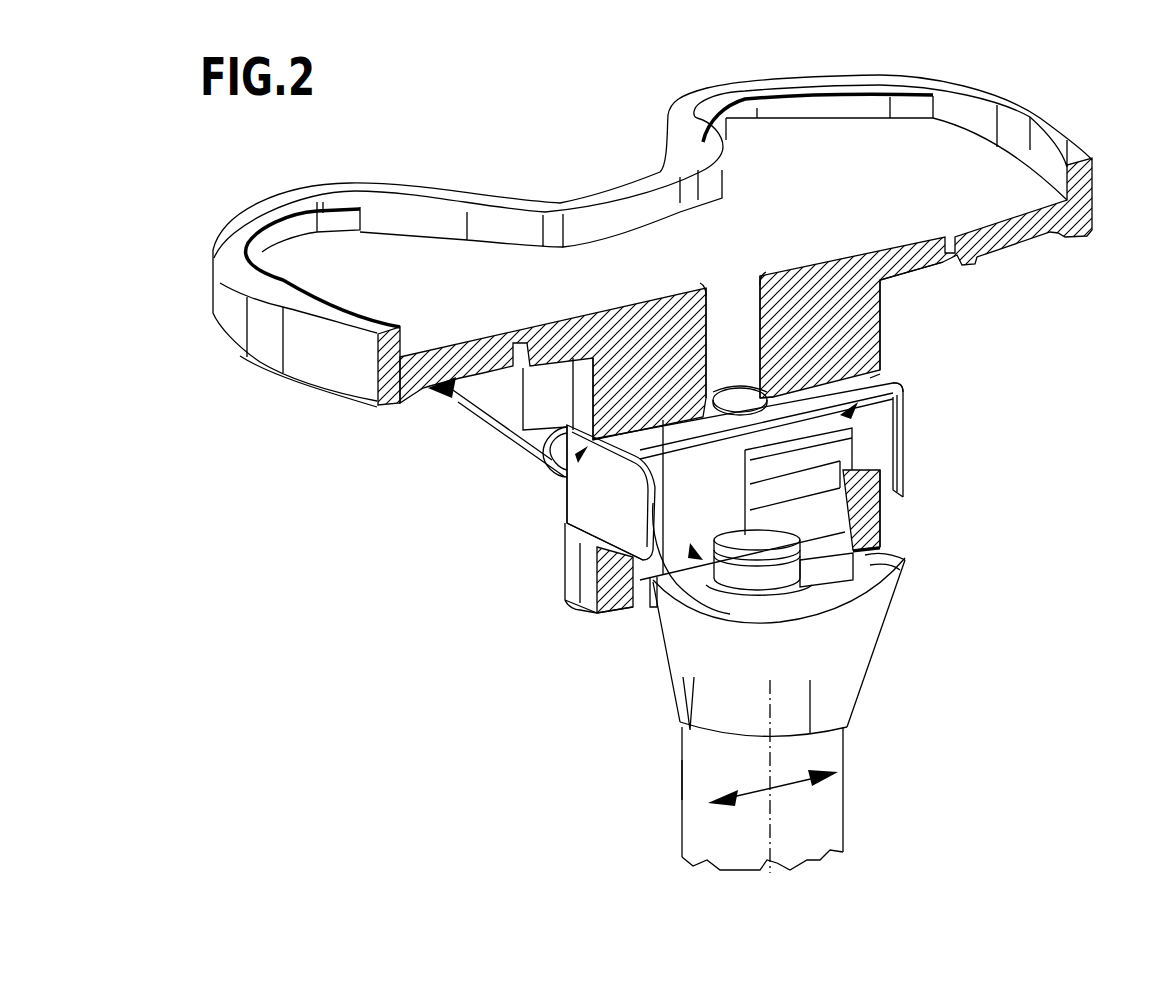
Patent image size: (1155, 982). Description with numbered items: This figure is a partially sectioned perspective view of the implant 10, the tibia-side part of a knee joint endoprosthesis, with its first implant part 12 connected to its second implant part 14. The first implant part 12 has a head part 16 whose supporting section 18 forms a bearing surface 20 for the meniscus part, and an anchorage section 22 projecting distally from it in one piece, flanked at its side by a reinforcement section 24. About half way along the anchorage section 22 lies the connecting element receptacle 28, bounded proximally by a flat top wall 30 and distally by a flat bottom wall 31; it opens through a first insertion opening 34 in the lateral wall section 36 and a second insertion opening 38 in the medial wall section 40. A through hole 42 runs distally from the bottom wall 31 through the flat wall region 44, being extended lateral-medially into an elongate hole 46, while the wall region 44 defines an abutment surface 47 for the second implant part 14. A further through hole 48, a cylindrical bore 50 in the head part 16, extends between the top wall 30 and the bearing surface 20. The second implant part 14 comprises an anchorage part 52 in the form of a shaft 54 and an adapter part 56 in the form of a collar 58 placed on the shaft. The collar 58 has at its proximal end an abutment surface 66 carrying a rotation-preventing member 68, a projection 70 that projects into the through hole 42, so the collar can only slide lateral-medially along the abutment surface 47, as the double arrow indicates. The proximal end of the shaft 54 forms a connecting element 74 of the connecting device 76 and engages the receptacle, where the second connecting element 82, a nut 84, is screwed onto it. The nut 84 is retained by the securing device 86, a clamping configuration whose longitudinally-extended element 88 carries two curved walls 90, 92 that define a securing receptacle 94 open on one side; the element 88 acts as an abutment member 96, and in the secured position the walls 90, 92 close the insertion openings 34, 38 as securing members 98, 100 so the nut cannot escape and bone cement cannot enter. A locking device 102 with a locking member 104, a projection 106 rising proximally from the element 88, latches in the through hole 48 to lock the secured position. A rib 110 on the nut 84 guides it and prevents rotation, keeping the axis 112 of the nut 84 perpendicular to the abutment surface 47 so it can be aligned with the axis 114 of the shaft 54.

The implant 10 is at (520, 118).
The first implant part 12 is at (1068, 90).
The second implant part 14 is at (668, 818).
The head part 16 is at (970, 92).
The supporting section 18 is at (787, 150).
The bearing surface 20 is at (408, 255).
The anchorage section 22 is at (870, 338).
The reinforcement section 24 is at (477, 402).
The connecting element receptacle 28 is at (670, 530).
The top wall 30 is at (907, 383).
The bottom wall 31 is at (877, 488).
The first insertion opening 34 is at (548, 470).
The lateral wall section 36 is at (573, 563).
The second insertion opening 38 is at (884, 373).
The medial wall section 40 is at (890, 307).
The through hole 42 is at (580, 590).
The wall region 44 is at (597, 613).
The elongate hole 46 is at (648, 608).
The abutment surface 47 is at (617, 612).
The through hole 48 is at (748, 292).
The cylindrical bore 50 is at (718, 283).
The anchorage part 52 is at (830, 830).
The shaft 54 is at (830, 787).
The adapter part 56 is at (848, 695).
The collar 58 is at (858, 672).
The abutment surface 66 is at (883, 567).
The rotation-preventing member 68 is at (880, 592).
The projection 70 is at (882, 577).
The connecting element 74 is at (797, 578).
The connecting device 76 is at (700, 605).
The connecting element 82 is at (765, 580).
The nut 84 is at (728, 587).
The securing device 86 is at (914, 432).
The longitudinally-extended element 88 is at (907, 407).
The curved wall 90 is at (578, 497).
The curved wall 92 is at (905, 450).
The securing receptacle 94 is at (887, 500).
The abutment member 96 is at (663, 435).
The securing member 98 is at (578, 522).
The securing member 100 is at (905, 478).
The locking device 102 is at (720, 390).
The locking member 104 is at (752, 388).
The projection 106 is at (760, 395).
The rib 110 is at (852, 553).
The axis 112 is at (740, 477).
The axis 114 is at (765, 693).